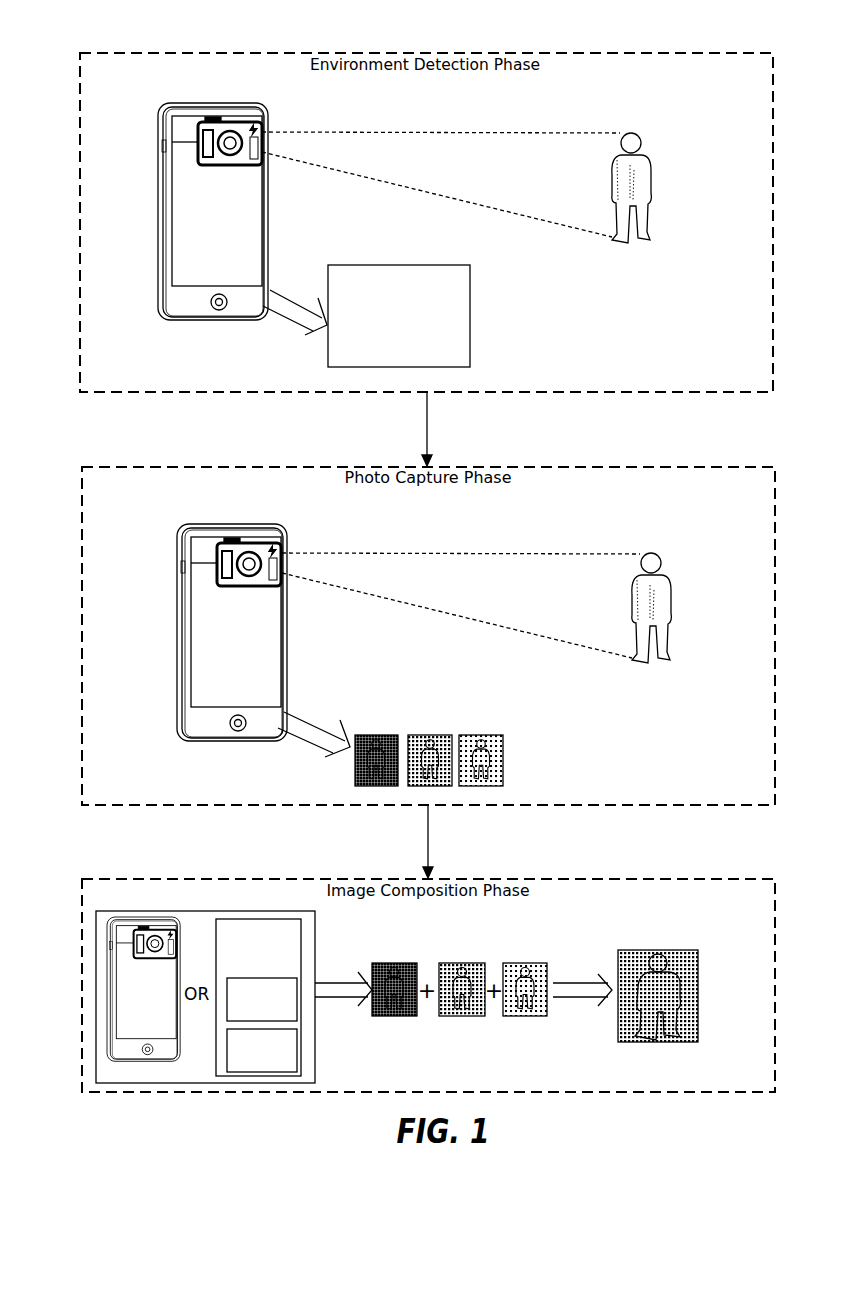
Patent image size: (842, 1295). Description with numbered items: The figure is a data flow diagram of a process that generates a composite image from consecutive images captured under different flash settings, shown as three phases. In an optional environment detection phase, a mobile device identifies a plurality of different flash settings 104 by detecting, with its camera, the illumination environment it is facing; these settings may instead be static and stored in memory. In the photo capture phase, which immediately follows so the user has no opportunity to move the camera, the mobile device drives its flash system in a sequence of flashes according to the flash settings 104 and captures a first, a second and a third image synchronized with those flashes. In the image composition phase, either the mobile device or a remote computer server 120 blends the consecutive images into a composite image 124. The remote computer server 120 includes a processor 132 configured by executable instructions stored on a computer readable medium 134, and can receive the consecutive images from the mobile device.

The flash settings 104 is at (470, 330).
The remote computer server 120 is at (258, 997).
The composite image 124 is at (680, 1012).
The processor 132 is at (262, 999).
The computer readable medium 134 is at (262, 1050).